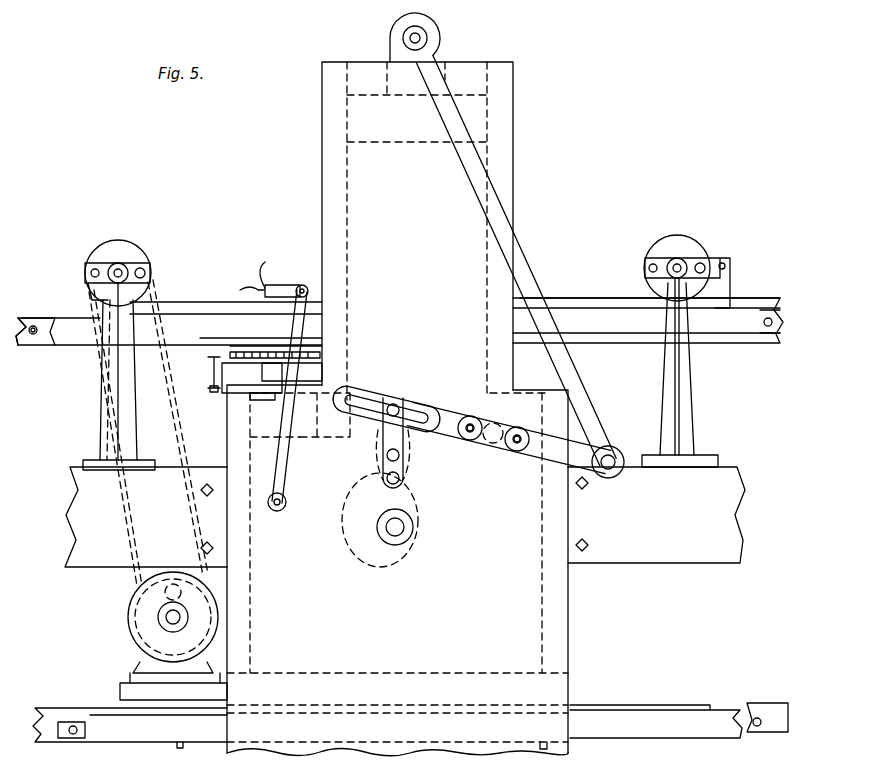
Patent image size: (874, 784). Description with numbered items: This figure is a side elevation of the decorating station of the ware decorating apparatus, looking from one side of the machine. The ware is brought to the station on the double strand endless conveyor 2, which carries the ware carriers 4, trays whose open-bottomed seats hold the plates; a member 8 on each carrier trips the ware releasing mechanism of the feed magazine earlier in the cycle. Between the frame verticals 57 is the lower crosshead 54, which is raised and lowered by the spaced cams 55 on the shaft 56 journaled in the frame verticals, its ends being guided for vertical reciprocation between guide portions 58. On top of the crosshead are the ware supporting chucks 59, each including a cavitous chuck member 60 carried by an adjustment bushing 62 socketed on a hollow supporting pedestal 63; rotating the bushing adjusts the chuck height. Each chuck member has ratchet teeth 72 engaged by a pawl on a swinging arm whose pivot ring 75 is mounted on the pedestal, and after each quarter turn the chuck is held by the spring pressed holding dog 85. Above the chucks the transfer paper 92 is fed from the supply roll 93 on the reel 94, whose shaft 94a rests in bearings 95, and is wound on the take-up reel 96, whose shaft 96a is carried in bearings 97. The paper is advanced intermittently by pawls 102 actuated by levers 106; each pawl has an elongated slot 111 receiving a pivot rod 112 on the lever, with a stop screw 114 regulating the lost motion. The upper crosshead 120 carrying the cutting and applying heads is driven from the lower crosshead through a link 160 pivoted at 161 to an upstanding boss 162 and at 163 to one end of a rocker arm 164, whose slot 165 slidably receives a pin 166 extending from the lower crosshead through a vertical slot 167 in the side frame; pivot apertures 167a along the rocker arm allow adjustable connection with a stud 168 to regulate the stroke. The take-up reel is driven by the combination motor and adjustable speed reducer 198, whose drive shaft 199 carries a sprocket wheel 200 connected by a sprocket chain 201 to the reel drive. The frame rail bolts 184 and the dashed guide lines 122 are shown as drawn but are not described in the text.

The double strand endless conveyor 2 is at (32, 338).
The ware carrier 4 is at (58, 346).
The tripping member 8 is at (180, 749).
The lower crosshead 54 is at (328, 438).
The cam 55 is at (372, 567).
The shaft 56 is at (400, 535).
The frame vertical 57 is at (470, 75).
The guide portion 58 is at (542, 615).
The ware supporting chuck 59 is at (262, 352).
The chuck member 60 is at (213, 372).
The adjustment bushing 62 is at (300, 370).
The supporting pedestal 63 is at (298, 400).
The ratchet teeth 72 is at (252, 378).
The pivot ring 75 is at (280, 396).
The holding dog 85 is at (199, 370).
The transfer paper 92 is at (588, 298).
The supply roll 93 is at (656, 420).
The reel 94 is at (673, 238).
The reel shaft 94a is at (690, 260).
The bearing 95 is at (667, 265).
The take-up reel 96 is at (100, 252).
The reel shaft 96a is at (128, 255).
The bearing 97 is at (108, 270).
The pawl 102 is at (305, 285).
The lever 106 is at (290, 413).
The slot 111 is at (290, 300).
The pivot rod 112 is at (270, 288).
The stop screw 114 is at (254, 291).
The crosshead 120 is at (470, 117).
The guide 122 is at (350, 158).
The link 160 is at (520, 258).
The pivot 161 is at (403, 38).
The boss 162 is at (447, 53).
The pivot 163 is at (615, 468).
The rocker arm 164 is at (452, 410).
The slot 165 is at (360, 406).
The pin 166 is at (396, 405).
The vertical slot 167 is at (383, 440).
The pivot aperture 167a is at (468, 440).
The stud 168 is at (495, 425).
The bolt 184 is at (35, 325).
The combination motor and adjustable speed reducer 198 is at (128, 627).
The drive shaft 199 is at (165, 592).
The sprocket wheel 200 is at (178, 428).
The sprocket chain 201 is at (160, 470).